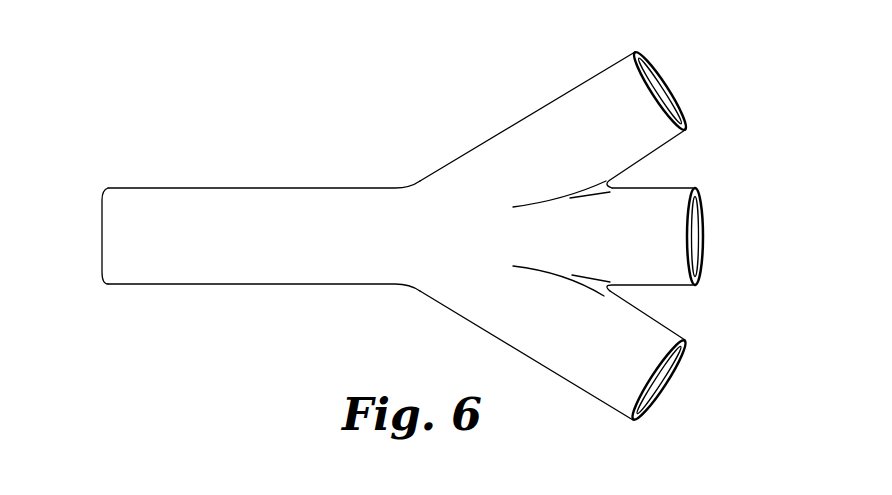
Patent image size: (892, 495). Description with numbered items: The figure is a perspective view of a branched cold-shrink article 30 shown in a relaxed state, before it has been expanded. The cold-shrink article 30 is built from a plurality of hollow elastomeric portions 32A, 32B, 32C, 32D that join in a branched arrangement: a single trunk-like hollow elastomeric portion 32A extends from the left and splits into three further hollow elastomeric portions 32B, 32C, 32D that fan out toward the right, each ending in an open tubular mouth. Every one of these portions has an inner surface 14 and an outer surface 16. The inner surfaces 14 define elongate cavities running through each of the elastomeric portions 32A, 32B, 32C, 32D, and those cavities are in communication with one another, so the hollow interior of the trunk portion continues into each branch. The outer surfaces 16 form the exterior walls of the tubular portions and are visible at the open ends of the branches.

The inner surface 14 is at (101, 220).
The outer surface 16 is at (138, 268).
The branched cold-shrink article 30 is at (410, 225).
The hollow elastomeric portion 32A is at (283, 272).
The hollow elastomeric portion 32B is at (592, 82).
The hollow elastomeric portion 32C is at (670, 197).
The hollow elastomeric portion 32D is at (593, 388).